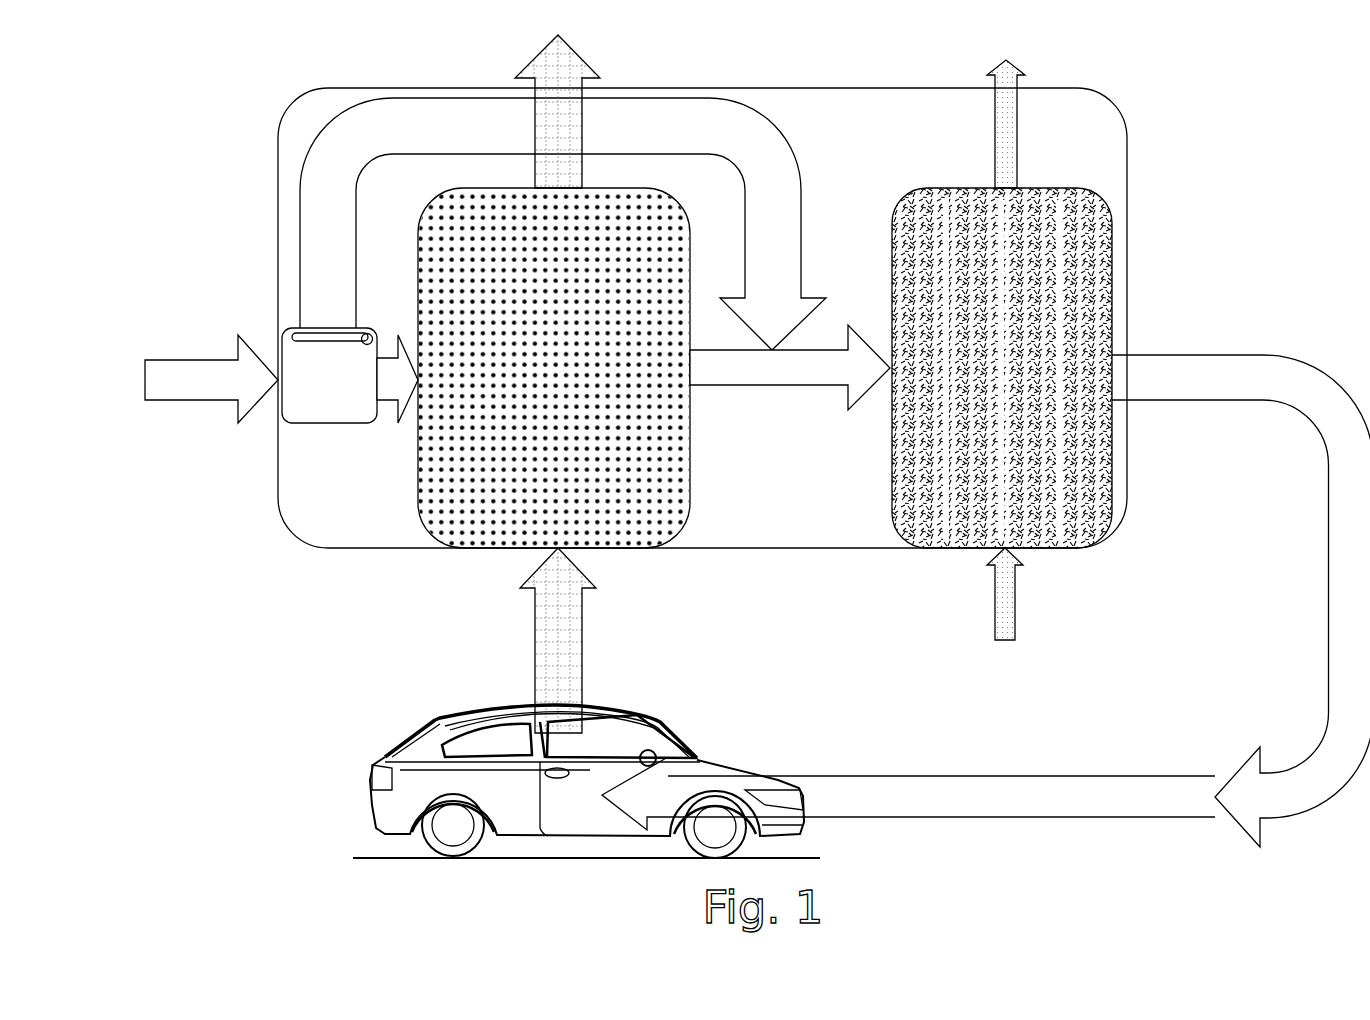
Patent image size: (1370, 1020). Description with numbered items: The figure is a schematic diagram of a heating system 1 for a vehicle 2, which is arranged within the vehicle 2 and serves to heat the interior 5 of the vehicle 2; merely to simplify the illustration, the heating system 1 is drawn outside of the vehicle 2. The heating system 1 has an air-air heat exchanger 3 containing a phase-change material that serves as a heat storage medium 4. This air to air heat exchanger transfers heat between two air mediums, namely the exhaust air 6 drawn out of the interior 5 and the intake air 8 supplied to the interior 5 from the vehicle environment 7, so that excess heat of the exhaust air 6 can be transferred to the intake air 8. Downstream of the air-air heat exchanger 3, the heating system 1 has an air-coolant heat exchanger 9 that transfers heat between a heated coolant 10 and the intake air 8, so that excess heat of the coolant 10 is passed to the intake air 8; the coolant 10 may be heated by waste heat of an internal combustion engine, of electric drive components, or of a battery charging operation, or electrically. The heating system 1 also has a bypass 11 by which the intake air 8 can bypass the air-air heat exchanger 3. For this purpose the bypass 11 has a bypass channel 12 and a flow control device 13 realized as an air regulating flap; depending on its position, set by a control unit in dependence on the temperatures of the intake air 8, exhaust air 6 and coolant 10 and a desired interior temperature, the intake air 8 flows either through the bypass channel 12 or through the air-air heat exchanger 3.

The heating system 1 is at (278, 133).
The vehicle 2 is at (380, 752).
The air-air heat exchanger 3 is at (690, 478).
The heat storage medium 4 is at (673, 395).
The interior 5 is at (615, 740).
The exhaust air 6 is at (522, 68).
The vehicle environment 7 is at (235, 487).
The intake air 8 is at (175, 400).
The air-coolant heat exchanger 9 is at (960, 188).
The coolant 10 is at (1017, 120).
The bypass 11 is at (340, 68).
The bypass channel 12 is at (658, 105).
The flow control device 13 is at (337, 423).